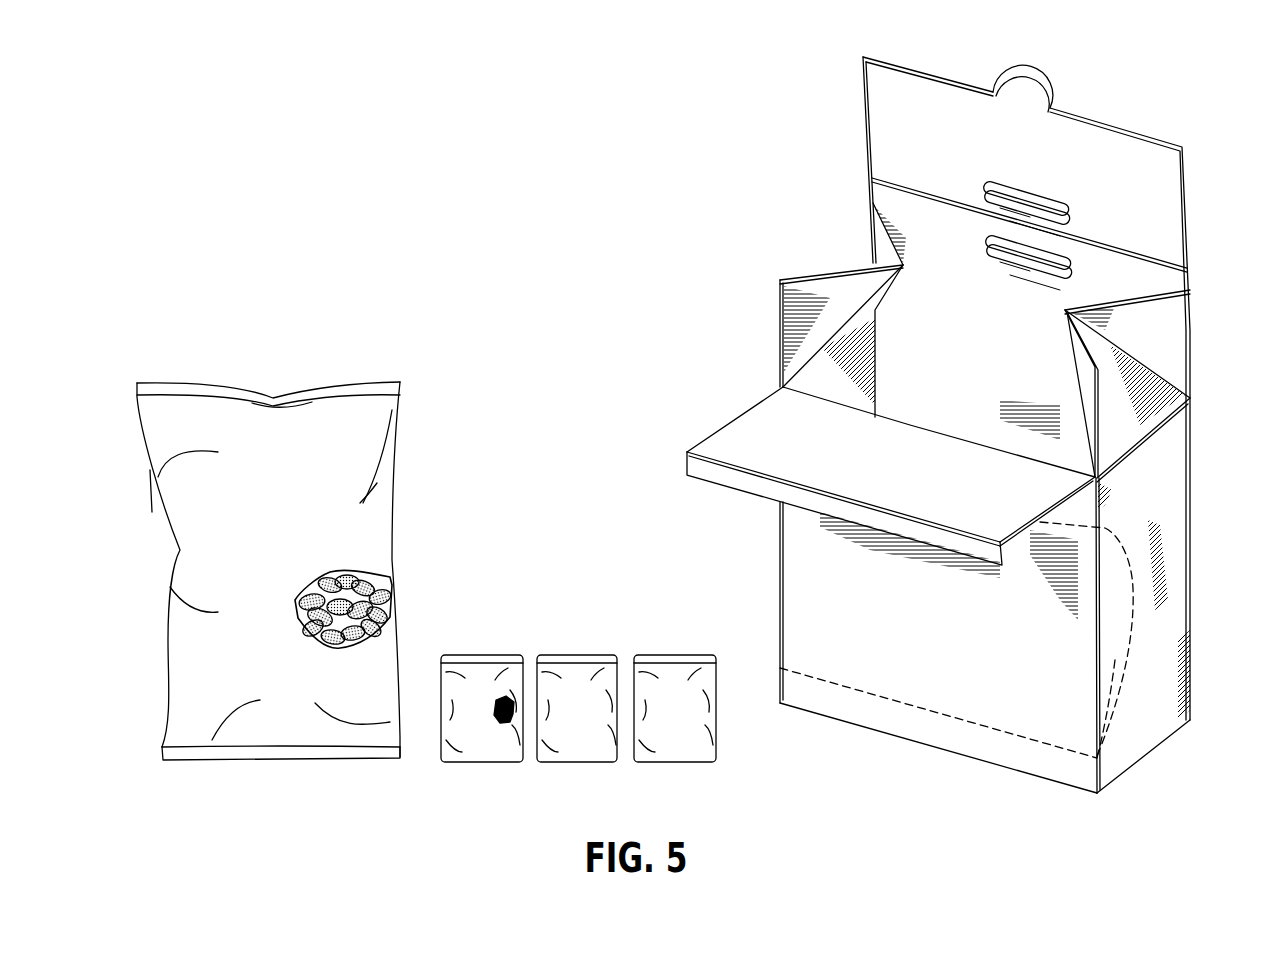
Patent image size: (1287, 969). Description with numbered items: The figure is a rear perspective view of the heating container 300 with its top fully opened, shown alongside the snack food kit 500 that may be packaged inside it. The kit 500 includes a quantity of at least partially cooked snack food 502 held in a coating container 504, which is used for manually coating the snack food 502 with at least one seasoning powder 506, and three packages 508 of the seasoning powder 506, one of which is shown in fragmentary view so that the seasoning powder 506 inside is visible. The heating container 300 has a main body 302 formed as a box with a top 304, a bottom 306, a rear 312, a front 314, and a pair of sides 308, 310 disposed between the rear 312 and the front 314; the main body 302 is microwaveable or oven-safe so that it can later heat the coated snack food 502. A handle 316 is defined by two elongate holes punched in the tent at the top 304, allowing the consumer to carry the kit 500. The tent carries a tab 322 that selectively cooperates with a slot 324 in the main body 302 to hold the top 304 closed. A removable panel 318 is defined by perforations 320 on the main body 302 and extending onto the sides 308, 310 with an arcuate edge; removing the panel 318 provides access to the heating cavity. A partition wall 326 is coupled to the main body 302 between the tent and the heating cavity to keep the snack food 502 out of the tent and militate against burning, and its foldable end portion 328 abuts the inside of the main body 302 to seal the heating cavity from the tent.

The heating container 300 is at (1143, 118).
The main body 302 is at (1170, 493).
The top 304 is at (921, 172).
The bottom 306 is at (916, 756).
The side 308 is at (1172, 542).
The side 310 is at (770, 603).
The rear 312 is at (922, 618).
The front 314 is at (1199, 423).
The handle 316 is at (1030, 243).
The removable panel 318 is at (1076, 684).
The perforations 320 is at (1120, 545).
The tab 322 is at (1036, 82).
The slot 324 is at (950, 438).
The partition wall 326 is at (828, 466).
The foldable end portion 328 is at (686, 462).
The snack food kit 500 is at (478, 253).
The snack food 502 is at (380, 590).
The coating container 504 is at (380, 527).
The seasoning powder 506 is at (507, 725).
The package 508 is at (652, 655).